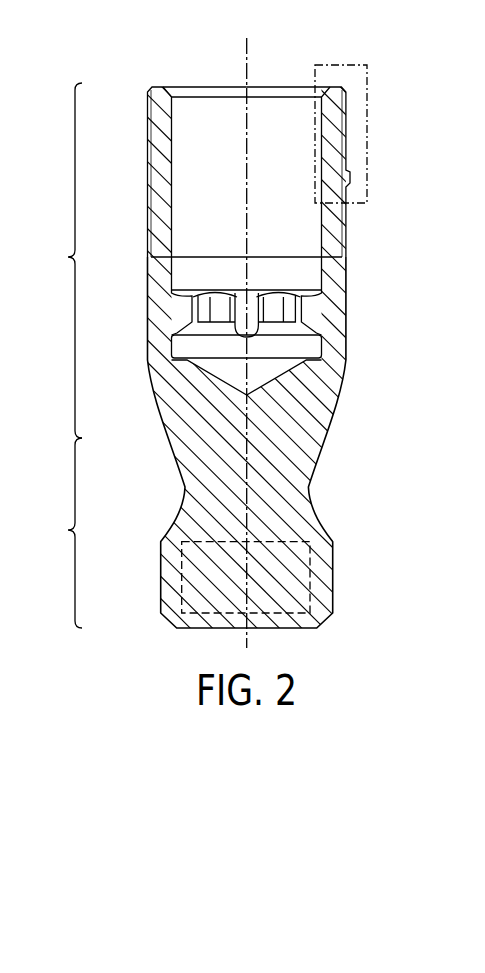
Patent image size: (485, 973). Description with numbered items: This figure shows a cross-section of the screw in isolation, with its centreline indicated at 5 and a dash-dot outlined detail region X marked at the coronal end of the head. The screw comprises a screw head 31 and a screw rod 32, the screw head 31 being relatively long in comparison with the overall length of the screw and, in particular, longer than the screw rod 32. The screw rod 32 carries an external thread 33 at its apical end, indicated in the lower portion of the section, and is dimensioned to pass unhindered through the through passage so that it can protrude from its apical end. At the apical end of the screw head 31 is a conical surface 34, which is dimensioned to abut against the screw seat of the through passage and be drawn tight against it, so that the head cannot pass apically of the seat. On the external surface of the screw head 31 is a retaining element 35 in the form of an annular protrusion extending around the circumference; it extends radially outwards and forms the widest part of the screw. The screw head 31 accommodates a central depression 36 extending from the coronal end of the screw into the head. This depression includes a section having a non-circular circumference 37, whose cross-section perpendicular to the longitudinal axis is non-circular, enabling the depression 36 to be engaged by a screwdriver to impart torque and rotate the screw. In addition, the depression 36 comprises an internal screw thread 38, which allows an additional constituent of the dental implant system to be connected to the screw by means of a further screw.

The central axis of nozzle 5 is at (247, 50).
The screw head 31 is at (59, 260).
The screw rod 32 is at (59, 533).
The external thread 33 is at (342, 542).
The conical surface 34 is at (152, 393).
The retaining element 35 is at (147, 176).
The central depression 36 is at (196, 76).
The section having a non-circular circumference 37 is at (350, 290).
The internal screw thread 38 is at (330, 228).
The detail region X is at (367, 68).